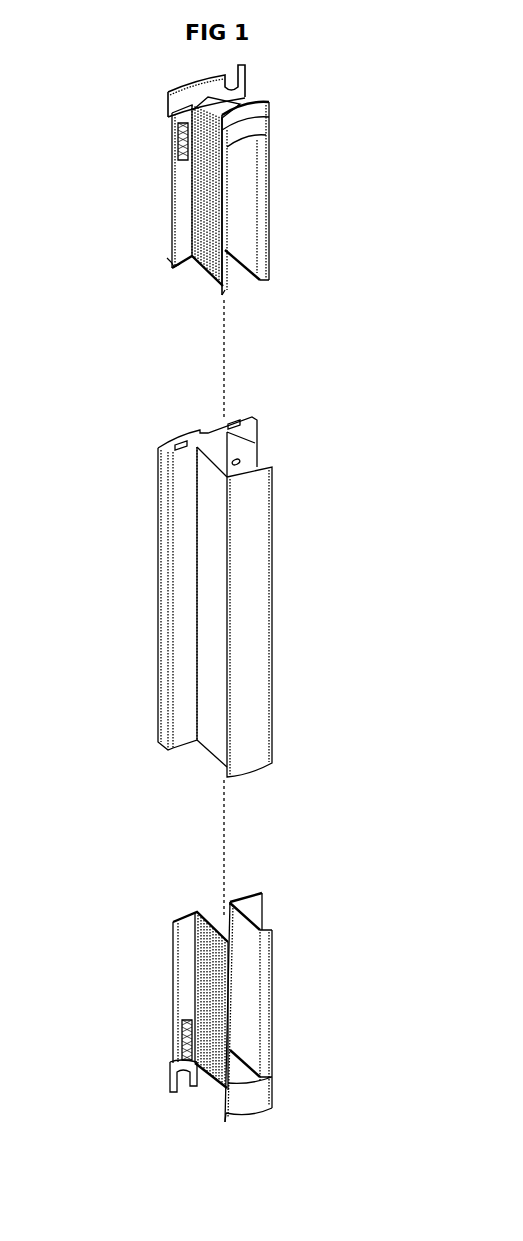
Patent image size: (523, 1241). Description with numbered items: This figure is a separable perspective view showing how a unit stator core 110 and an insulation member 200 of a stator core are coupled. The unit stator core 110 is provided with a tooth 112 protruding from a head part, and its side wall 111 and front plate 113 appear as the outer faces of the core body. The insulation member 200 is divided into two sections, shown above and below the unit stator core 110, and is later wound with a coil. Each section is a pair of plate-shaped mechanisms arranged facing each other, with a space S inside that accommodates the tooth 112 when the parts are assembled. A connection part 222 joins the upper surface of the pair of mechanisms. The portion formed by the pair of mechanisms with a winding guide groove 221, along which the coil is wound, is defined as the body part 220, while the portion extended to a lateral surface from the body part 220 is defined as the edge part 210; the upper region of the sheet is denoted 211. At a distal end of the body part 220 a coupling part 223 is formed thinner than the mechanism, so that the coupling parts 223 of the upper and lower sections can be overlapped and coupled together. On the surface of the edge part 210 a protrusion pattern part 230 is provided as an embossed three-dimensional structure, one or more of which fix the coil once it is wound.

The insulation member 200 is at (300, 121).
The edge part 210 is at (176, 268).
The upper portion of sheet 211 is at (263, 163).
The body part 220 is at (267, 287).
The winding guide groove 221 is at (200, 170).
The connection part 222 is at (197, 100).
The coupling part 223 is at (180, 258).
The protrusion pattern part 230 is at (180, 143).
The space S is at (237, 203).
The unit stator core 110 is at (369, 501).
The side wall 111 is at (203, 532).
The tooth 112 is at (242, 443).
The front plate 113 is at (262, 573).